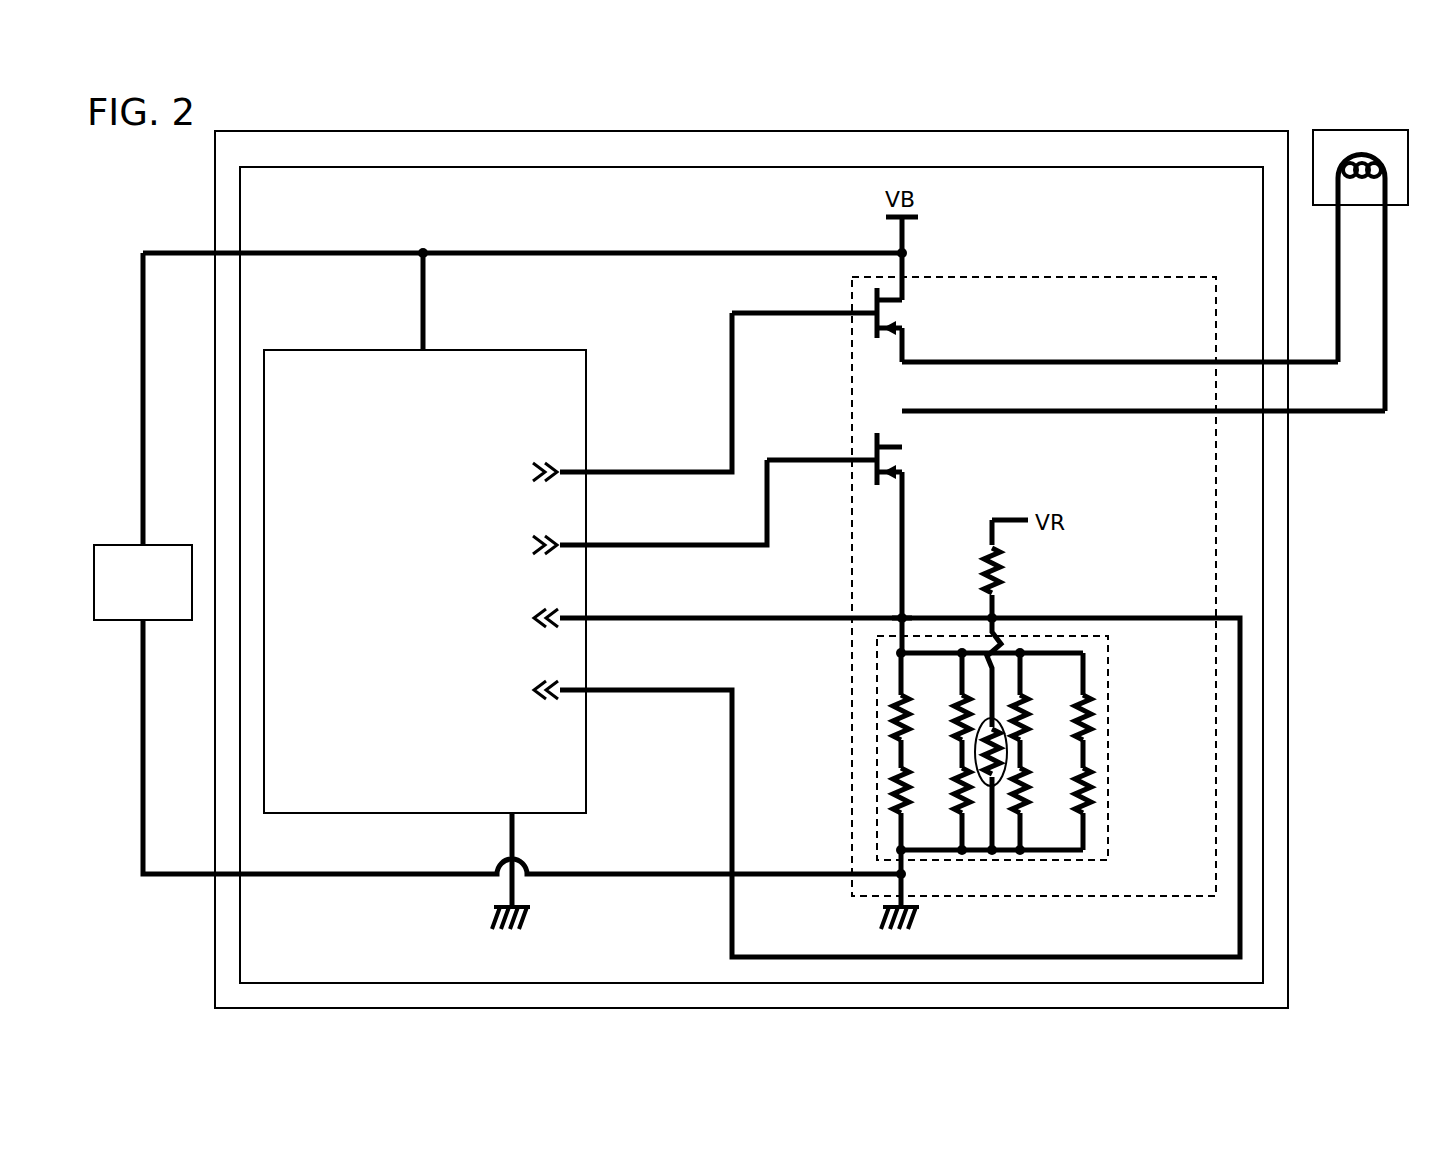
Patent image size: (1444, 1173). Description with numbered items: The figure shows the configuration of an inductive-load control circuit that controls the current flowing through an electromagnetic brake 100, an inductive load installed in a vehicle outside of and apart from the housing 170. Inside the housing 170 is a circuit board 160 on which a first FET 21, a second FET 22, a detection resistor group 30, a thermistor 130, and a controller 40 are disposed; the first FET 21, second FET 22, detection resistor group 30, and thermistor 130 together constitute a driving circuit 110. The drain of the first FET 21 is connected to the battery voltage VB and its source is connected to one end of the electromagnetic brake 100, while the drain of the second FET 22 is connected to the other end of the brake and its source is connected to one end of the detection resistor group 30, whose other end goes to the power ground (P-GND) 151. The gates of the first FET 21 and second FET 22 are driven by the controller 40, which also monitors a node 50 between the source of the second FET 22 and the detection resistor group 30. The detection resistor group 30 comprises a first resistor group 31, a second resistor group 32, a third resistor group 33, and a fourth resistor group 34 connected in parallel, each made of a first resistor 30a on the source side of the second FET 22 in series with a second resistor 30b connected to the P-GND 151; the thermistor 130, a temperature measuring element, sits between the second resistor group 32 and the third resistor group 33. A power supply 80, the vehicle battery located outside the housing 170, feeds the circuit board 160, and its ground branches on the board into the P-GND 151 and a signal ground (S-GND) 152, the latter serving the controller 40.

The housing 170 is at (768, 131).
The circuit board 160 is at (768, 167).
The driving circuit 110 is at (1040, 277).
The electromagnetic brake 100 is at (1363, 130).
The first FET 21 is at (912, 310).
The second FET 22 is at (912, 455).
The controller 40 is at (530, 350).
The power supply 80 is at (120, 543).
The node 50 is at (900, 614).
The detection resistor group 30 is at (1115, 690).
The first resistor 30a is at (1145, 722).
The second resistor 30b is at (893, 806).
The first resistor group 31 is at (888, 751).
The second resistor group 32 is at (950, 754).
The third resistor group 33 is at (1033, 752).
The fourth resistor group 34 is at (1096, 750).
The thermistor 130 is at (1000, 788).
The power ground (P-GND) 151 is at (882, 907).
The signal ground (S-GND) 152 is at (528, 907).